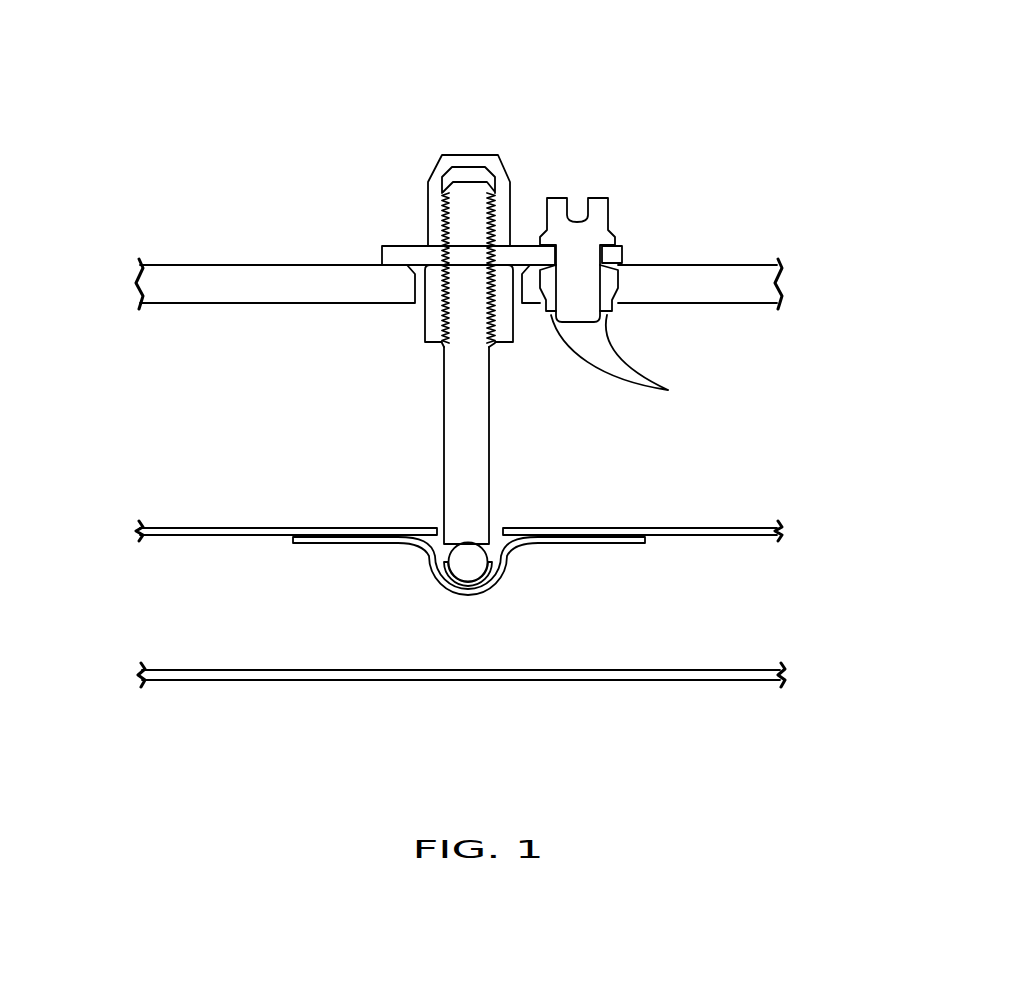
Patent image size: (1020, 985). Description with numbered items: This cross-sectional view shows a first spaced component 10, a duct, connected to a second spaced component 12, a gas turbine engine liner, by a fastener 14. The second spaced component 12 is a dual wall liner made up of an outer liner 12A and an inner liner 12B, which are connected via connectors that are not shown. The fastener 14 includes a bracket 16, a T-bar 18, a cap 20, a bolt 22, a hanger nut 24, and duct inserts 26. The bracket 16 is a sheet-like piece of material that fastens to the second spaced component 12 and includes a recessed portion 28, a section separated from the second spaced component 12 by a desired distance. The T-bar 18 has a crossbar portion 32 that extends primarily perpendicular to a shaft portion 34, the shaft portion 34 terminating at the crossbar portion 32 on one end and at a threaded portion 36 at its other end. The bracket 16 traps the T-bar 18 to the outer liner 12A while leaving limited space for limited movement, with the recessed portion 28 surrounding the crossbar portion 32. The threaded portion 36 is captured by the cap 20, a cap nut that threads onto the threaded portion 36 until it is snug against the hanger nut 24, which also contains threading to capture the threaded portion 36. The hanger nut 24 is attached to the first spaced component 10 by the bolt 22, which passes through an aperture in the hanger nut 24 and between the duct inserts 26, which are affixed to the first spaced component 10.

The first spaced component 10 is at (697, 267).
The second spaced component 12 is at (451, 586).
The outer liner 12A is at (765, 527).
The inner liner 12B is at (783, 680).
The fastener 14 is at (509, 338).
The bracket 16 is at (420, 557).
The T-bar 18 is at (509, 398).
The cap 20 is at (443, 155).
The bolt 22 is at (623, 259).
The hanger nut 24 is at (387, 243).
The duct inserts 26 is at (629, 359).
The recessed portion 28 is at (532, 580).
The crossbar portion 32 is at (473, 568).
The shaft portion 34 is at (445, 428).
The threaded portion 36 is at (445, 238).